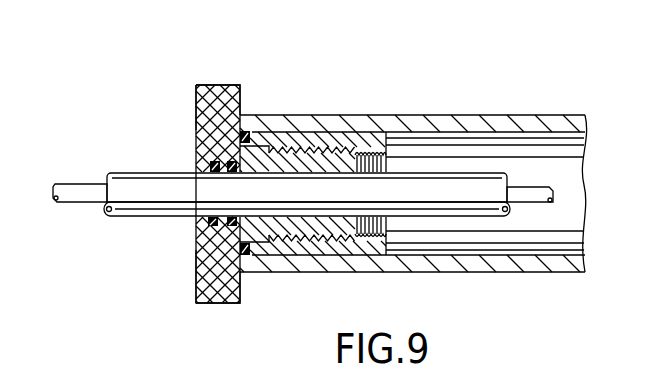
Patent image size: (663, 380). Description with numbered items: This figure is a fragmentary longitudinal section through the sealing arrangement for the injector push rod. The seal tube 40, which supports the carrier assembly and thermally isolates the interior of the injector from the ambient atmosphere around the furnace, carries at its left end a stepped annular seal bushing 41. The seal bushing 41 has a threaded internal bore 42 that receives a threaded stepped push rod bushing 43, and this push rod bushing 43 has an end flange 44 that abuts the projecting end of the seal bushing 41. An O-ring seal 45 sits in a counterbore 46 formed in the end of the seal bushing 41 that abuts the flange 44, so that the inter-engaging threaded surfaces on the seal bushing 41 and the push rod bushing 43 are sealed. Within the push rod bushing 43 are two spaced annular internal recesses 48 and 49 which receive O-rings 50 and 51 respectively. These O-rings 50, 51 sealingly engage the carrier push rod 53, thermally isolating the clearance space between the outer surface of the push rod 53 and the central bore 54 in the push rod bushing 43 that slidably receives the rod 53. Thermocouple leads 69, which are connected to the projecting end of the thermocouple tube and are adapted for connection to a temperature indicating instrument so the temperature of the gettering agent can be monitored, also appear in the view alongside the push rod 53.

The seal tube 40 is at (508, 114).
The seal bushing 41 is at (295, 118).
The threaded internal bore 42 is at (388, 168).
The push rod bushing 43 is at (203, 128).
The end flange 44 is at (216, 88).
The O-ring seal 45 is at (247, 131).
The counterbore 46 is at (241, 250).
The annular internal recess 48 is at (205, 227).
The annular internal recess 49 is at (203, 273).
The O-ring 50 is at (209, 163).
The O-ring 51 is at (197, 97).
The carrier push rod 53 is at (130, 205).
The central bore 54 is at (316, 172).
The thermocouple leads 69 is at (73, 188).